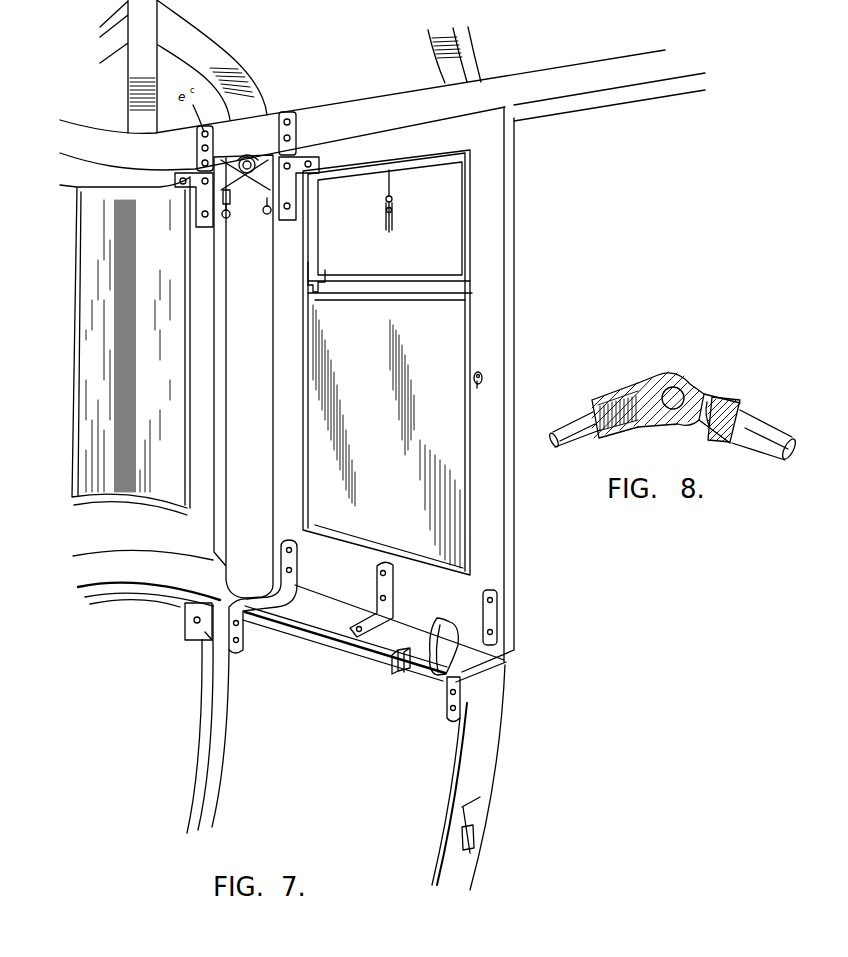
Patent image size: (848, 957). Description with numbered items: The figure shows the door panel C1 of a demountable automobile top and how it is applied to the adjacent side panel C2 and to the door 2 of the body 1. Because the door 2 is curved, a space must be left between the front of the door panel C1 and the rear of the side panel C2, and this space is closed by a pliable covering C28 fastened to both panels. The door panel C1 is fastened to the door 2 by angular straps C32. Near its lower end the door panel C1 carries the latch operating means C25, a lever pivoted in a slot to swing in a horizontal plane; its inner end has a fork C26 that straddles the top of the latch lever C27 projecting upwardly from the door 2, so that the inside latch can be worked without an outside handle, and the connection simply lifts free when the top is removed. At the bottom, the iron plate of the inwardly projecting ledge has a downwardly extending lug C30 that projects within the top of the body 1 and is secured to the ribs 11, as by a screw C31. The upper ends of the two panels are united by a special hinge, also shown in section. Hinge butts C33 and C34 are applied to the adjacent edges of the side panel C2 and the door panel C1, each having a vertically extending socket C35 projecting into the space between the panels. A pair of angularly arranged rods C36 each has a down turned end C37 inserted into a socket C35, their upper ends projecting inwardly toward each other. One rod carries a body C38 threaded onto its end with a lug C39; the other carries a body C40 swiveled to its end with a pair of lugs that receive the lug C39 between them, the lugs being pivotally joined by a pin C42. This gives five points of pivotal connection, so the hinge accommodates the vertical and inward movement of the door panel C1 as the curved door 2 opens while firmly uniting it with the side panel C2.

In FIG. 7, the door panel C1 is at (392, 362).
In FIG. 7, the side panel C2 is at (125, 346).
In FIG. 7, the pliable covering C28 is at (243, 376).
In FIG. 7, the hinge butt C33 is at (178, 185).
In FIG. 7, the hinge butt C34 is at (292, 182).
In FIG. 7, the angularly arranged rods C36 is at (306, 140).
In FIG. 8, the angularly arranged rods C36 is at (577, 440).
In FIG. 7, the body C38 is at (235, 162).
In FIG. 8, the body C38 is at (606, 406).
In FIG. 7, the screw C31 is at (245, 176).
In FIG. 7, the socket C35 is at (223, 197).
In FIG. 7, the down turned end C37 is at (271, 212).
In FIG. 7, the angular straps C32 is at (445, 678).
In FIG. 7, the lug C30 is at (200, 632).
In FIG. 7, the ribs 11 is at (218, 722).
In FIG. 7, the body 1 is at (135, 666).
In FIG. 7, the door 2 is at (435, 777).
In FIG. 7, the latch lever C27 is at (440, 620).
In FIG. 7, the latch operating means C25 is at (479, 617).
In FIG. 7, the fork C26 is at (427, 642).
In FIG. 8, the lug C39 is at (640, 383).
In FIG. 8, the pin C42 is at (722, 371).
In FIG. 8, the body C40 is at (740, 405).